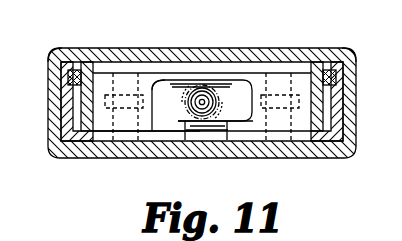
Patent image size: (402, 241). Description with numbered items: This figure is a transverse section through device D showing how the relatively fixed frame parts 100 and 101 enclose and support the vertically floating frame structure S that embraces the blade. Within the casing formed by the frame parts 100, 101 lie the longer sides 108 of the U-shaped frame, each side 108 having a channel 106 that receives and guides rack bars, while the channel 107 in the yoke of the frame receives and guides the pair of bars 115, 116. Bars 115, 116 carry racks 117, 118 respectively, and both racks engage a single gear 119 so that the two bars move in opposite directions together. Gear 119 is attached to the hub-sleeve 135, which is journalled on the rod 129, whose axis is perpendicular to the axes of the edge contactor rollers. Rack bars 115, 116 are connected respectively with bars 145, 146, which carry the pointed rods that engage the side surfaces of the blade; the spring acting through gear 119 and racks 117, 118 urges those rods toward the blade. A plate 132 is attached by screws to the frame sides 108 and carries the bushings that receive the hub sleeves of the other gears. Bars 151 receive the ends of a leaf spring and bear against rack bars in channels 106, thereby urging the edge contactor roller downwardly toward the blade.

The frame part 100 is at (251, 50).
The frame part 101 is at (187, 148).
The channel 106 is at (78, 115).
The channel 107 is at (226, 81).
The longer side of frame 108 is at (85, 62).
The rack bar 115 is at (147, 120).
The rack bar 116 is at (273, 117).
The rack 117 is at (173, 80).
The rack 118 is at (224, 126).
The gear 119 is at (220, 95).
The rod 129 is at (218, 107).
The plate 132 is at (62, 52).
The hub-sleeve 135 is at (164, 100).
The bar 145 is at (281, 93).
The bar 146 is at (123, 92).
The bar 151 is at (72, 80).